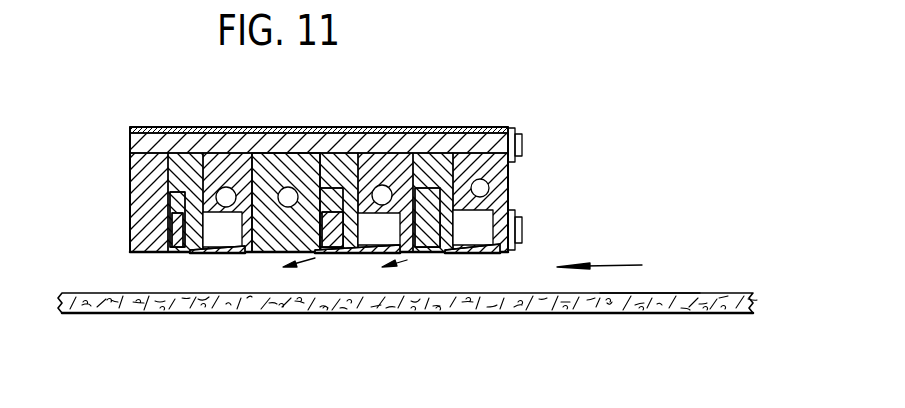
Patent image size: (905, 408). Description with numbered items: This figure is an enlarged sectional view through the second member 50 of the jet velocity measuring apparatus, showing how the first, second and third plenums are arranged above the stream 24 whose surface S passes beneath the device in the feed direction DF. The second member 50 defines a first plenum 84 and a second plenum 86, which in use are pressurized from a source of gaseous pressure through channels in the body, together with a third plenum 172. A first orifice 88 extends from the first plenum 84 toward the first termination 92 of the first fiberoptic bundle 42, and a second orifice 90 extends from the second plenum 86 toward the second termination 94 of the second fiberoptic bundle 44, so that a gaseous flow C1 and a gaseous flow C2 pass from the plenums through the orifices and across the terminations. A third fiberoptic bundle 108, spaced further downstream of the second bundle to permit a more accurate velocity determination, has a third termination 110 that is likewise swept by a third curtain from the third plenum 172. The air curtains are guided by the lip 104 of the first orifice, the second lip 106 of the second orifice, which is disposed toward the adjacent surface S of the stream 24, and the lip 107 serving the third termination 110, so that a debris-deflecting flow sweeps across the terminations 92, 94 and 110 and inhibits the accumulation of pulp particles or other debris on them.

The second member 50 is at (403, 158).
The third fiberoptic bundle 108 is at (185, 193).
The first termination 92 is at (182, 242).
The second fiberoptic bundle 44 is at (323, 210).
The first fiberoptic bundle 42 is at (460, 200).
The third plenum 172 is at (208, 232).
The second plenum 86 is at (379, 229).
The first plenum 84 is at (495, 209).
The second termination 94 is at (326, 213).
The lip 104 is at (497, 248).
The third termination 110 is at (177, 252).
The lip 107 is at (203, 253).
The second lip 106 is at (378, 252).
The second orifice 90 is at (340, 246).
The first orifice 88 is at (482, 252).
The gaseous flow C2 is at (297, 275).
The gaseous flow C1 is at (415, 252).
The direction of feed DF is at (605, 264).
The stream 24 is at (712, 292).
The surface S is at (640, 292).